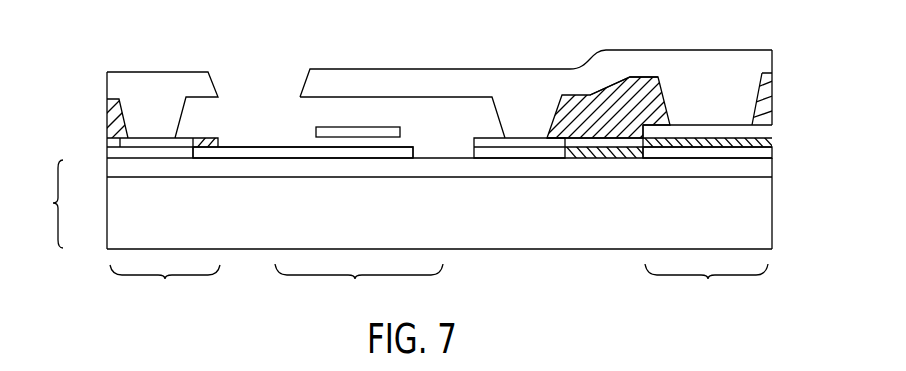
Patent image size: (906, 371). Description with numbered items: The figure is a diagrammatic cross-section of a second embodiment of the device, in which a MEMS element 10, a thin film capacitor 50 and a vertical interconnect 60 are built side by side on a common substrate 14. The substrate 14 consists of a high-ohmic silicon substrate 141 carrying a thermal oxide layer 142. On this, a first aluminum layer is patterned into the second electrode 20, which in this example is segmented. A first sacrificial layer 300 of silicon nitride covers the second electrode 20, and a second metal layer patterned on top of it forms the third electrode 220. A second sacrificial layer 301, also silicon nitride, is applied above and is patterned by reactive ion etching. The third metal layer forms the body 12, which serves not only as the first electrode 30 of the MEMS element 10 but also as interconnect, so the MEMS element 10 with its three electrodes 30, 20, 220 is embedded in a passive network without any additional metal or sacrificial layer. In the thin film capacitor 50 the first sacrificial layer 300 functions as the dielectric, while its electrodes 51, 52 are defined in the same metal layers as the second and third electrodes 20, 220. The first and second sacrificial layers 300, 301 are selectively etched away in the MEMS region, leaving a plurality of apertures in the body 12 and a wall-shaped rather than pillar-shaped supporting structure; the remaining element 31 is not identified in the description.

The MEMS element 10 is at (359, 285).
The body 12 is at (150, 88).
The substrate 14 is at (45, 204).
The high-ohmic silicon substrate 141 is at (122, 218).
The thermal oxide layer 142 is at (130, 167).
The second electrode 20 is at (272, 150).
The third electrode 220 is at (355, 131).
The first electrode 30 is at (395, 80).
The first sacrificial layer 300 is at (686, 142).
The second sacrificial layer 301 is at (602, 107).
The semiconductor layer 31 is at (525, 123).
The thin film capacitor 50 is at (706, 285).
The electrode of the thin-film capacitor 51 is at (748, 150).
The electrode of the thin-film capacitor 52 is at (705, 128).
The vertical interconnect 60 is at (165, 286).